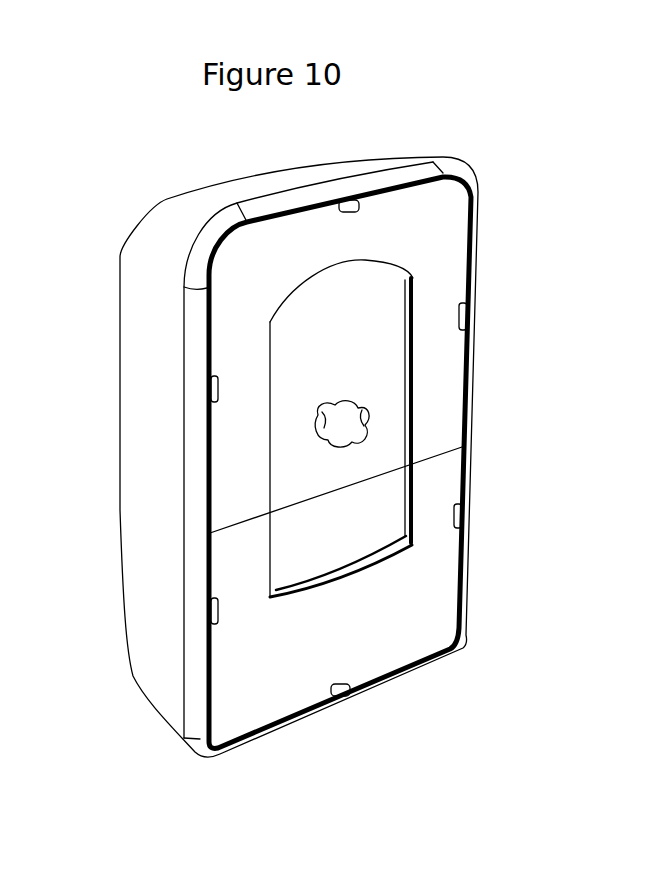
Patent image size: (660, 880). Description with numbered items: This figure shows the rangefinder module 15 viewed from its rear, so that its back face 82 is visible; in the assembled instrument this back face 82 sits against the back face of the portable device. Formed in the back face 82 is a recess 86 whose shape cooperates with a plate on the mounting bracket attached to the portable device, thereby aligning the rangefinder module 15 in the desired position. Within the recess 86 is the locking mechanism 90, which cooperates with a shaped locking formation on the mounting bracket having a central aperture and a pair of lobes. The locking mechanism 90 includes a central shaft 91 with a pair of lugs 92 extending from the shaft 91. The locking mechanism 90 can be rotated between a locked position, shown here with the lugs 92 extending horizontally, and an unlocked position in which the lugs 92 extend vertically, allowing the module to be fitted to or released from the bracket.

The rangefinder module 15 is at (548, 297).
The back face 82 is at (433, 418).
The recess 86 is at (382, 310).
The locking mechanism 90 is at (300, 450).
The central shaft 91 is at (346, 433).
The lugs 92 is at (330, 429).